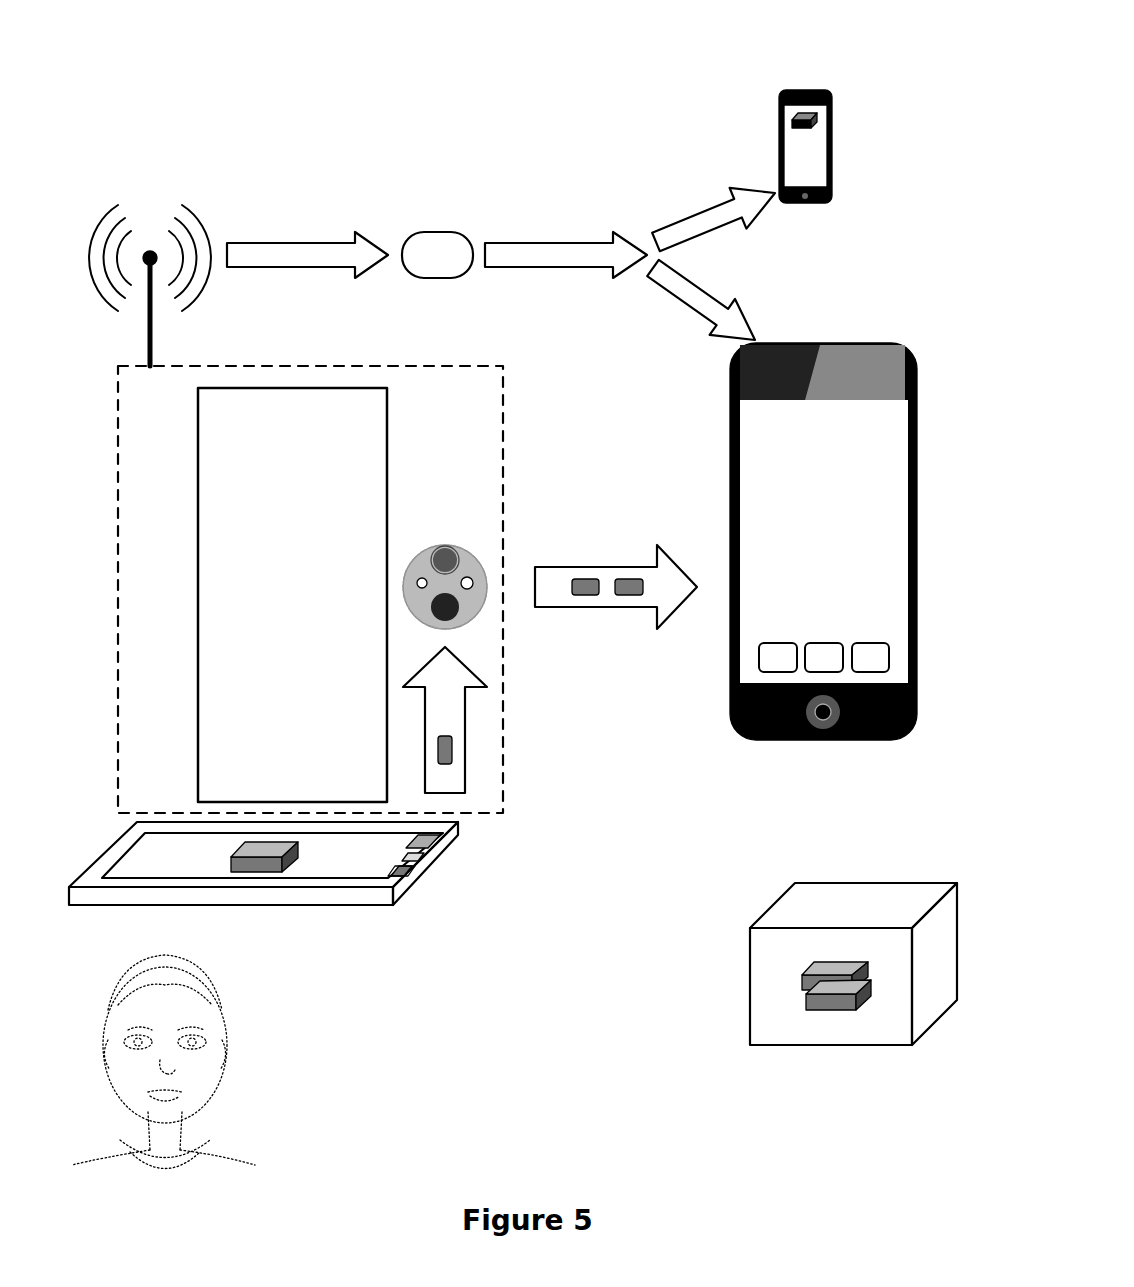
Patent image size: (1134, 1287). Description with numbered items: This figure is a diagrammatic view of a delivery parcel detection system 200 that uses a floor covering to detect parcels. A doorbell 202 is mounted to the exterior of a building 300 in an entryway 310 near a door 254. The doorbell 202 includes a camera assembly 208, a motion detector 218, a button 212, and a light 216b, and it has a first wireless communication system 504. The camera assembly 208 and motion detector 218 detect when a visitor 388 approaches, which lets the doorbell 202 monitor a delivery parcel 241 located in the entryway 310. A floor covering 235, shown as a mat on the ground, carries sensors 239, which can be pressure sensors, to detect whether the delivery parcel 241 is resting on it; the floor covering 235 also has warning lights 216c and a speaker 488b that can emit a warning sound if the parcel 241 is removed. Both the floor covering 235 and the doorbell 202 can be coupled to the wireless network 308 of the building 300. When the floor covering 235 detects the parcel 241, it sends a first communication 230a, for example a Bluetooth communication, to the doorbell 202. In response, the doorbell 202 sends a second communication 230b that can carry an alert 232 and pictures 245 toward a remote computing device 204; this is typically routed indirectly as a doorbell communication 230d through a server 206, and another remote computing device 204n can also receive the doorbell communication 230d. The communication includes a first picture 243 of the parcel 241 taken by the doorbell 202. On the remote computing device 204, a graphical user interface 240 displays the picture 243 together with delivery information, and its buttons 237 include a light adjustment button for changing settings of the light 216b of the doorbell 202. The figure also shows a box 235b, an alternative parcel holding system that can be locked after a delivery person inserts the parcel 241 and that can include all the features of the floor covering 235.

The delivery parcel detection system 200 is at (507, 68).
The wireless network 308 is at (150, 194).
The doorbell communication 230d is at (305, 240).
The server 206 is at (432, 230).
The remote computing device 204n is at (768, 128).
The first picture 243 is at (820, 104).
The remote computing device 204 is at (786, 323).
The graphical user interface 240 is at (744, 660).
The buttons 237 is at (882, 645).
The building 300 is at (232, 366).
The door 254 is at (290, 388).
The doorbell 202 is at (452, 543).
The camera assembly 208 is at (438, 565).
The motion detector 218 is at (473, 543).
The button 212 is at (455, 615).
The light 216b is at (470, 580).
The second communication 230b is at (540, 606).
The first alert 232 is at (585, 580).
The pictures 245 is at (630, 598).
The first communication 230a is at (466, 777).
The floor covering 235 is at (448, 865).
The first wireless communication system 504 is at (462, 841).
The warning lights 216c is at (425, 862).
The speaker 488b is at (420, 882).
The sensors 239 is at (137, 881).
The entryway 310 is at (294, 940).
The delivery parcel 241 is at (295, 858).
The box 235b is at (826, 860).
The visitor 388 is at (246, 1082).